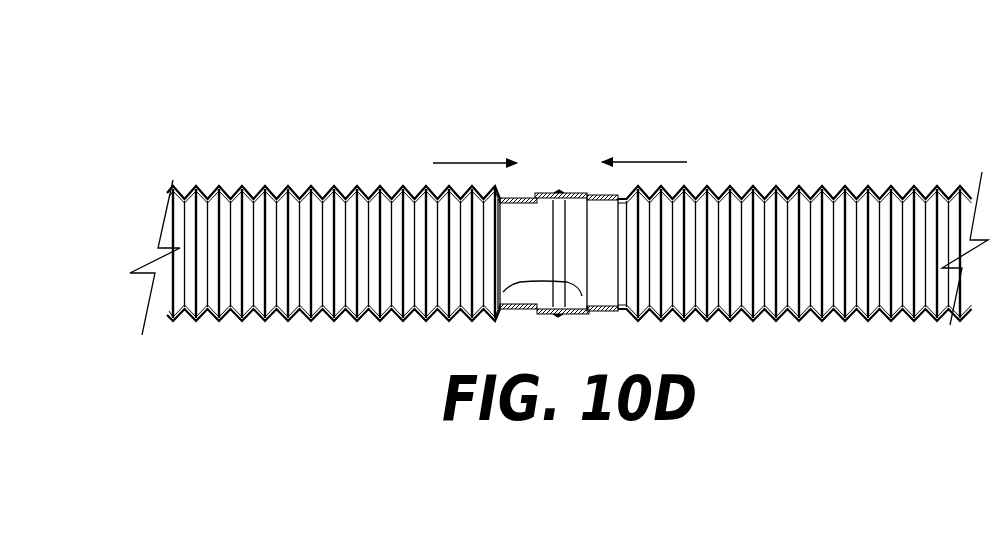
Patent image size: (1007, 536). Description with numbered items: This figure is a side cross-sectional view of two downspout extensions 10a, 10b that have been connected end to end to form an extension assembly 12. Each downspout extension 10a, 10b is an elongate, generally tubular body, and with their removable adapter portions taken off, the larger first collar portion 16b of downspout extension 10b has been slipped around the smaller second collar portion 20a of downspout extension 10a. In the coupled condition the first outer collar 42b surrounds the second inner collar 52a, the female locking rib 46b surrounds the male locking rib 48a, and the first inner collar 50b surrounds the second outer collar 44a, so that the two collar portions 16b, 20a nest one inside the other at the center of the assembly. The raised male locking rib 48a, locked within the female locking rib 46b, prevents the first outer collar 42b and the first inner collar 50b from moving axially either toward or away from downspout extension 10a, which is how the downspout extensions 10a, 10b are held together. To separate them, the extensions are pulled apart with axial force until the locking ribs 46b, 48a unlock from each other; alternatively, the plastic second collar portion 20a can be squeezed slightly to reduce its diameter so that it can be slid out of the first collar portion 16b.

The extension assembly 12 is at (557, 75).
The downspout extension 10a is at (320, 138).
The downspout extension 10b is at (862, 135).
The second inner collar 52a is at (515, 220).
The first outer collar 42b is at (537, 197).
The female locking rib 46b is at (563, 228).
The male locking rib 48a is at (572, 200).
The first inner collar 50b is at (572, 220).
The second outer collar 44a is at (620, 193).
The second collar portion 20a is at (543, 280).
The first collar portion 16b is at (620, 327).